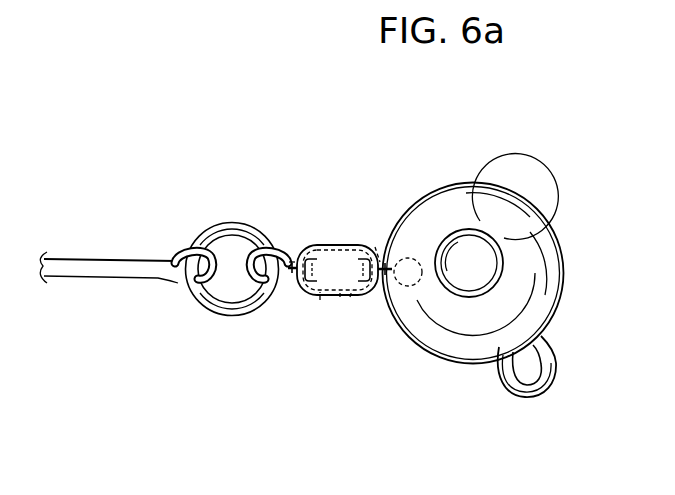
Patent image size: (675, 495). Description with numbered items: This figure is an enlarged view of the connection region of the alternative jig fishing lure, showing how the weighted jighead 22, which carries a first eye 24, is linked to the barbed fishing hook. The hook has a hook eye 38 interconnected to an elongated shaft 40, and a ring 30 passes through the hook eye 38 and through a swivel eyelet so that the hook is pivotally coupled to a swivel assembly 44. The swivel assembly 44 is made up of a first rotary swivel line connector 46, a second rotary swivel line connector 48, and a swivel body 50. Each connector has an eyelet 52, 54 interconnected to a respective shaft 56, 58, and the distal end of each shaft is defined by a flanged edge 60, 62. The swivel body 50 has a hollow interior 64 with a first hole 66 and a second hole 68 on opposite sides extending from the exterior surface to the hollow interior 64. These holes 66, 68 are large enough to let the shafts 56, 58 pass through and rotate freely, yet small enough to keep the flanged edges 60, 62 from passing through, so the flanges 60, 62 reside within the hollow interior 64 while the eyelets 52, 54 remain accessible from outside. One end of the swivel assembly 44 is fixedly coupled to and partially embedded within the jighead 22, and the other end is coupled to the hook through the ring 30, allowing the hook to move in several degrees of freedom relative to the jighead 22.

The weighted jighead 22 is at (518, 197).
The first eye 24 is at (540, 393).
The ring 30 is at (202, 303).
The hook eye 38 is at (180, 250).
The elongated shaft 40 is at (83, 277).
The swivel assembly 44 is at (340, 246).
The first rotary swivel line connector 46 is at (289, 250).
The second rotary swivel line connector 48 is at (377, 296).
The swivel body 50 is at (330, 244).
The eyelet 52 is at (277, 248).
The eyelet 54 is at (400, 258).
The shaft 56 is at (290, 291).
The shaft 58 is at (375, 247).
The flanged edge 60 is at (320, 300).
The flanged edge 62 is at (350, 297).
The hollow interior 64 is at (340, 297).
The first hole 66 is at (301, 247).
The second hole 68 is at (368, 246).